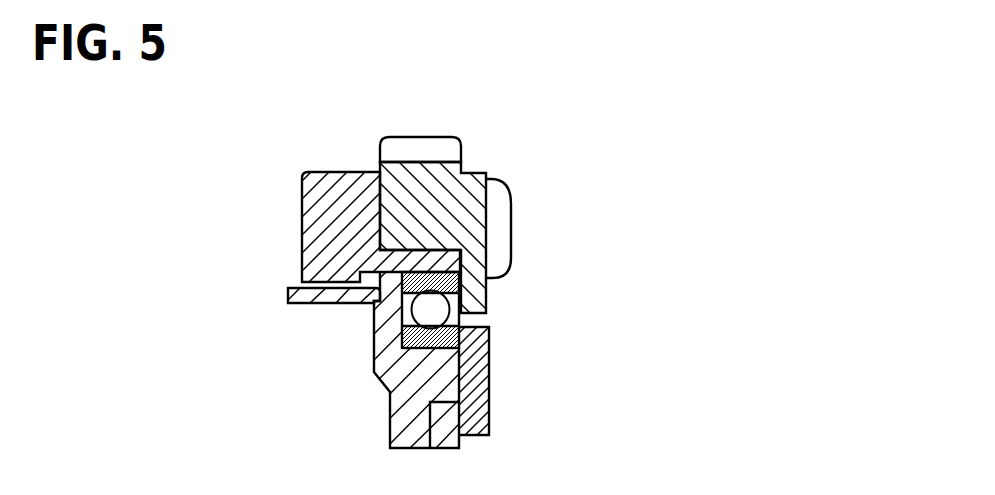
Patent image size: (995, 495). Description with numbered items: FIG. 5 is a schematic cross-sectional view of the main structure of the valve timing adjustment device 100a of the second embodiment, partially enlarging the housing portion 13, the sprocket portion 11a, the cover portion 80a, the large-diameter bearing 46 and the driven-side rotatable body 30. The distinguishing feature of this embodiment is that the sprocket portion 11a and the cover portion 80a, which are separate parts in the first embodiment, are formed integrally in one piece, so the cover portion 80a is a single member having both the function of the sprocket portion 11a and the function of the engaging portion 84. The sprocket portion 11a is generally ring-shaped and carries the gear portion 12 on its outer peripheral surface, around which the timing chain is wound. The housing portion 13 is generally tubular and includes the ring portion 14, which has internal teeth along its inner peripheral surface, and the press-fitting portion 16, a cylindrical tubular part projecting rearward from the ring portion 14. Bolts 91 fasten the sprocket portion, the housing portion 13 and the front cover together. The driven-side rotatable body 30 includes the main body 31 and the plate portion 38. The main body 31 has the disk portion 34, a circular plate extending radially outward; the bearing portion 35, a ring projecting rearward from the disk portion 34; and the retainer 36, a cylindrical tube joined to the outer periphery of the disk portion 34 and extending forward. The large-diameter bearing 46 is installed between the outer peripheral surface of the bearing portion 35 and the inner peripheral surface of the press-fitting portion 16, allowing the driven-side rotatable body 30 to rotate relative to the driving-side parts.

The valve timing adjustment device 100a is at (734, 91).
The sprocket portion 11a is at (431, 185).
The gear portion 12 is at (407, 152).
The housing portion 13 is at (345, 174).
The ring portion 14 is at (330, 203).
The press-fitting portion 16 is at (434, 256).
The driven-side rotatable body 30 is at (638, 280).
The main body 31 is at (491, 333).
The disk portion 34 is at (407, 427).
The bearing portion 35 is at (468, 372).
The retainer 36 is at (343, 294).
The plate portion 38 is at (497, 386).
The large-diameter bearing 46 is at (402, 337).
The cover portion 80a is at (477, 185).
The engaging portion 84 is at (462, 353).
The bolt 91 is at (503, 215).